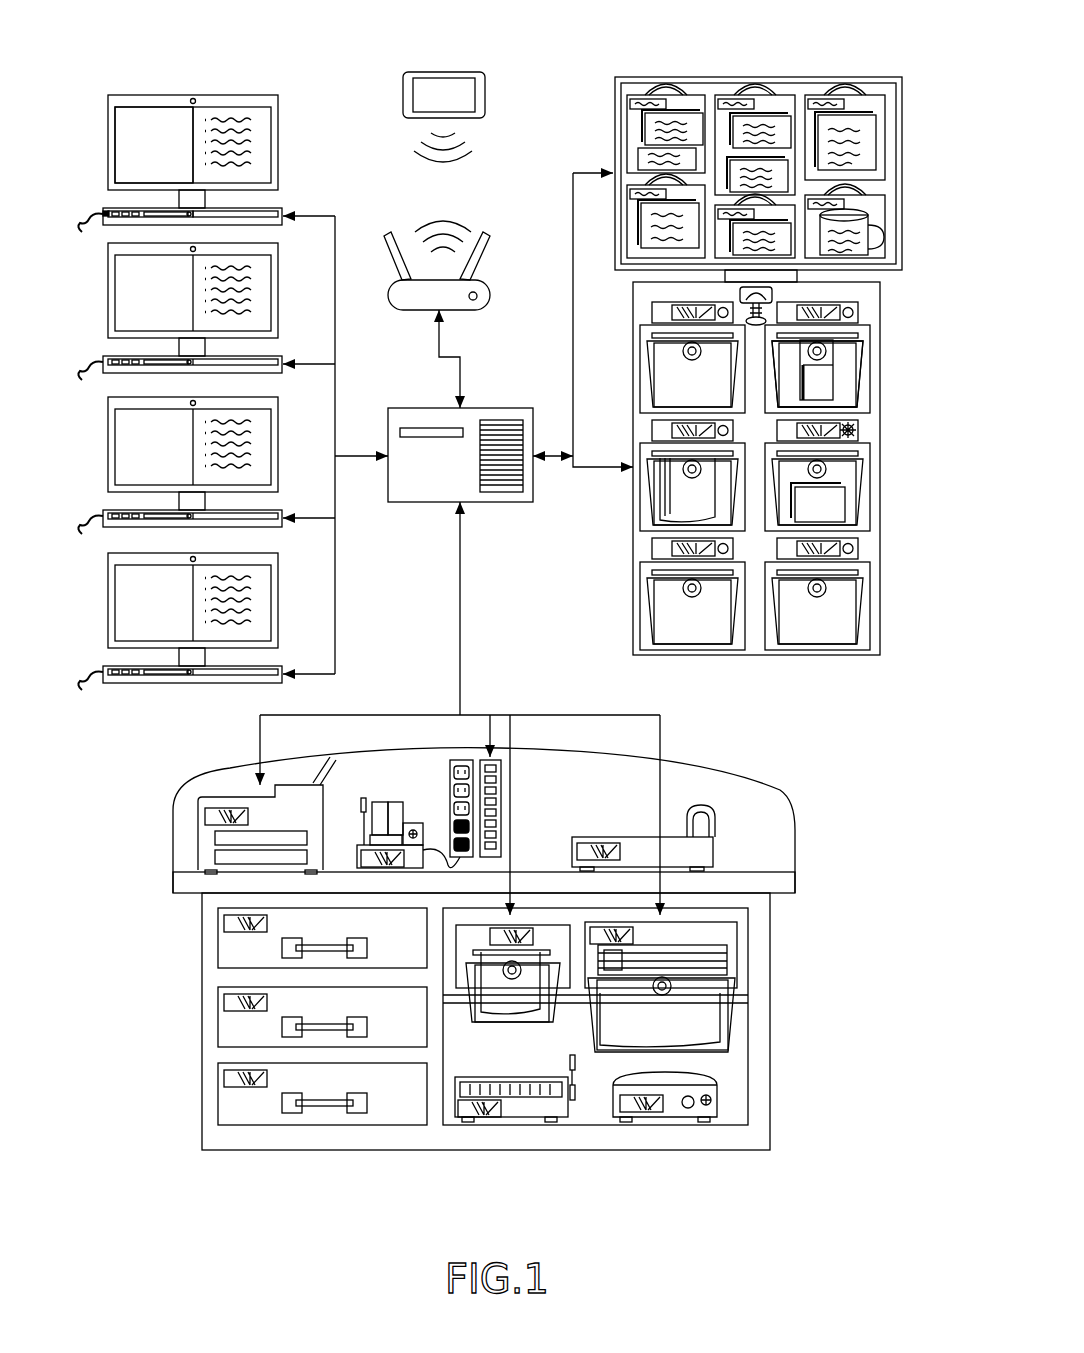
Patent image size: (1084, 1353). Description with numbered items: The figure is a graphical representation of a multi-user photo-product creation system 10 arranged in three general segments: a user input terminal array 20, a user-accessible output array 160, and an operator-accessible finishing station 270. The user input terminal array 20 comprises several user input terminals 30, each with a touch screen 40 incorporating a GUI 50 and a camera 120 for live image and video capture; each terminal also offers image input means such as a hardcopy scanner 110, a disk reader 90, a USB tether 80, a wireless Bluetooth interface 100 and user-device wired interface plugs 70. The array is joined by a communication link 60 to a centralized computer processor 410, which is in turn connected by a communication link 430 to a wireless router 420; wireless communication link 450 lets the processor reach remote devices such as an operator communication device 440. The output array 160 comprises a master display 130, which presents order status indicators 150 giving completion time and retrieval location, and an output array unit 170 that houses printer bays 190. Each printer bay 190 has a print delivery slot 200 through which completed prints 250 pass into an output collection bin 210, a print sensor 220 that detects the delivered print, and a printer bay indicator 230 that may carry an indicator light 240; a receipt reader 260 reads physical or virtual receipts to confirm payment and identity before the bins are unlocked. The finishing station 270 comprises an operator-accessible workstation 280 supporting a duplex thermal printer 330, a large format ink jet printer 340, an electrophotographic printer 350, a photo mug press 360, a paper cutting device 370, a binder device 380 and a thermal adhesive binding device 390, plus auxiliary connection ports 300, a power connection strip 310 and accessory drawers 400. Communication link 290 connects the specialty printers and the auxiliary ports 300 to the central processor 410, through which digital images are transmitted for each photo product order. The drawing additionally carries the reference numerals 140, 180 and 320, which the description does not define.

The multi-user photo-product creation system 10 is at (863, 50).
The user input terminal array 20 is at (202, 174).
The user input terminal 30 is at (211, 122).
The touch screen 40 is at (145, 115).
The GUI 50 is at (250, 140).
The communication link 60 is at (337, 347).
The user-device wired interface plugs 70 is at (85, 218).
The USB tether 80 is at (115, 220).
The disk reader 90 is at (153, 225).
The wireless Bluetooth interface 100 is at (187, 214).
The hardcopy scanner 110 is at (283, 205).
The camera 120 is at (193, 100).
The master display 130 is at (743, 179).
The communication link 140 is at (573, 232).
The order status indicator 150 is at (878, 205).
The user-accessible output array 160 is at (774, 445).
The output array unit 170 is at (875, 425).
The communication link 180 is at (586, 470).
The printer bay 190 is at (801, 397).
The print delivery slot 200 is at (855, 335).
The output collection bin 210 is at (855, 368).
The print sensor 220 is at (812, 345).
The printer bay indicator 230 is at (822, 302).
The indicator light 240 is at (855, 435).
The completed prints 250 is at (838, 512).
The receipt reader 260 is at (742, 298).
The finishing station 270 is at (770, 752).
The finishing station cabinet/workstation 280 is at (486, 995).
The communication link 290 is at (665, 716).
The auxiliary connection ports and wired communication links 300 is at (503, 780).
The power connection strip 310 is at (455, 767).
The device A 320 is at (515, 928).
The duplex thermal printer 330 is at (552, 930).
The large format ink jet printer 340 is at (730, 940).
The electrophotographic printer 350 is at (205, 832).
The photo mug press 360 is at (383, 808).
The paper cutting device 370 is at (713, 852).
The binder device 380 is at (533, 1108).
The thermal adhesive binding device 390 is at (688, 1110).
The accessory drawers 400 is at (215, 955).
The centralized computer processor 410 is at (416, 502).
The wireless router 420 is at (482, 309).
The communication link 430 is at (463, 375).
The operator communication device 440 is at (483, 72).
The wireless communication link 450 is at (453, 190).